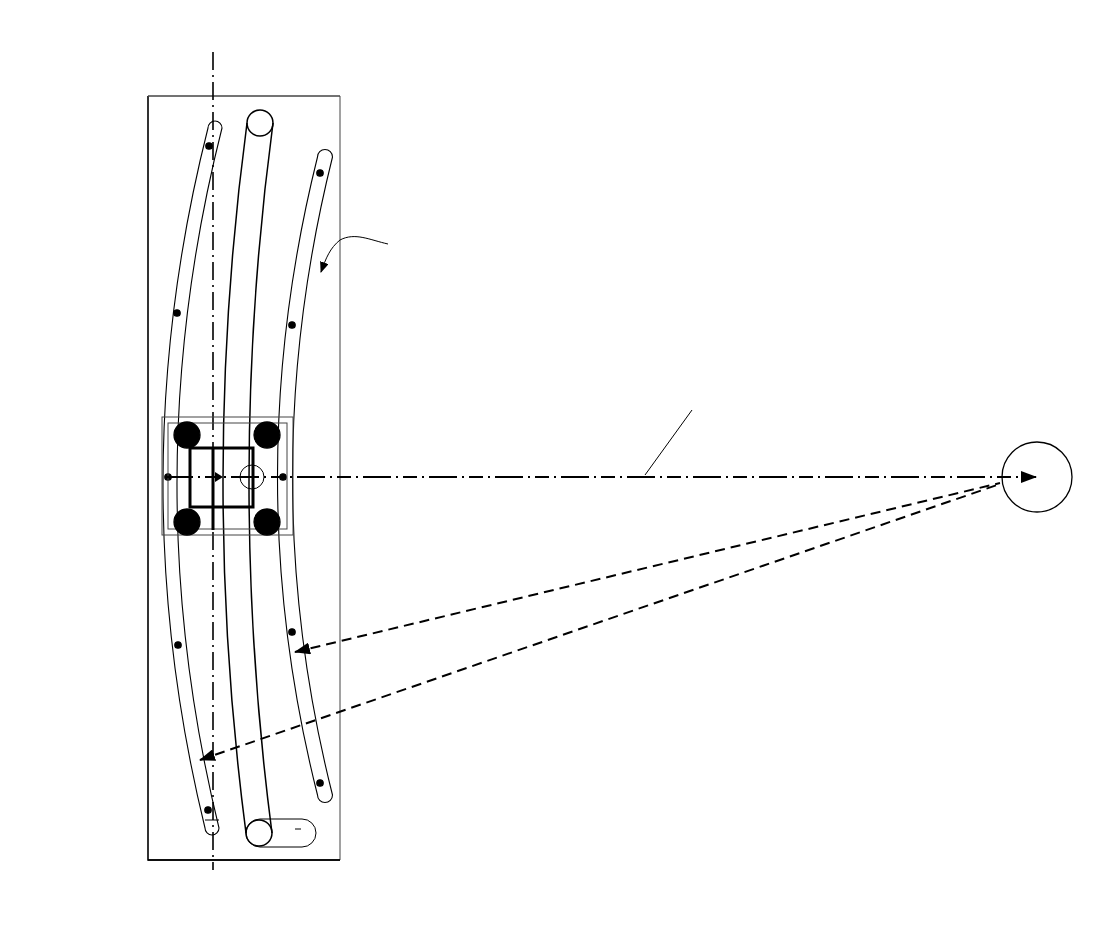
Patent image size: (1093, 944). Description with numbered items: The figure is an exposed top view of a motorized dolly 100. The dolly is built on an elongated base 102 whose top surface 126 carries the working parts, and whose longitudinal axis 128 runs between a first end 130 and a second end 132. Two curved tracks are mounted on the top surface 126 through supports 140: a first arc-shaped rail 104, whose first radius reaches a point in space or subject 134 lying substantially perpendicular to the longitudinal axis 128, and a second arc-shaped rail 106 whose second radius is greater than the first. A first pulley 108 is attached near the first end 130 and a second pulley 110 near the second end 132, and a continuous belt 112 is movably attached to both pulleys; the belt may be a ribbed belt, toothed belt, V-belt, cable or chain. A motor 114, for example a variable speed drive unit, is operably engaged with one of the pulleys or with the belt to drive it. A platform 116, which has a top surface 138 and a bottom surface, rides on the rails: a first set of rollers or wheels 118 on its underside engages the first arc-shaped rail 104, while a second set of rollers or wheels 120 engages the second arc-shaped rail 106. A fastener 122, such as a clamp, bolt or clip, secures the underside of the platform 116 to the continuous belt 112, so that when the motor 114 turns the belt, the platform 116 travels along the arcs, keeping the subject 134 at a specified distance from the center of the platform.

The motorized dolly 100 is at (559, 86).
The elongated base 102 is at (325, 362).
The first arc-shaped rail 104 is at (297, 587).
The second arc-shaped rail 106 is at (177, 680).
The first pulley 108 is at (262, 122).
The second pulley 110 is at (218, 826).
The continuous belt 112 is at (200, 590).
The motor 114 is at (313, 826).
The platform 116 is at (268, 463).
The first set of rollers or wheels 118 is at (277, 430).
The second set of rollers or wheels 120 is at (187, 437).
The fastener 122 is at (203, 485).
The top surface 126 is at (377, 252).
The longitudinal axis 128 is at (210, 461).
The first end 130 is at (279, 89).
The second end 132 is at (171, 863).
The point in space or subject 134 is at (1040, 445).
The top surface 138 is at (224, 531).
The supports 140 is at (322, 173).